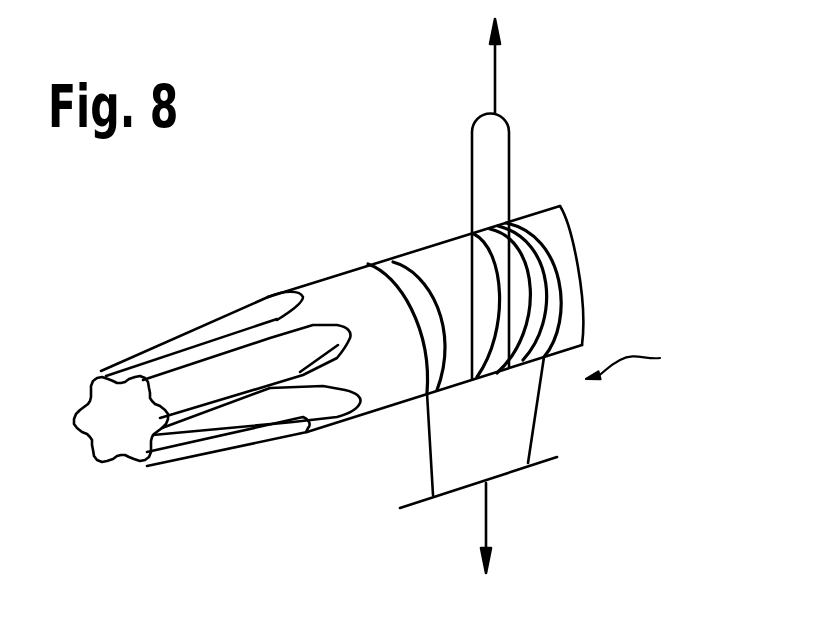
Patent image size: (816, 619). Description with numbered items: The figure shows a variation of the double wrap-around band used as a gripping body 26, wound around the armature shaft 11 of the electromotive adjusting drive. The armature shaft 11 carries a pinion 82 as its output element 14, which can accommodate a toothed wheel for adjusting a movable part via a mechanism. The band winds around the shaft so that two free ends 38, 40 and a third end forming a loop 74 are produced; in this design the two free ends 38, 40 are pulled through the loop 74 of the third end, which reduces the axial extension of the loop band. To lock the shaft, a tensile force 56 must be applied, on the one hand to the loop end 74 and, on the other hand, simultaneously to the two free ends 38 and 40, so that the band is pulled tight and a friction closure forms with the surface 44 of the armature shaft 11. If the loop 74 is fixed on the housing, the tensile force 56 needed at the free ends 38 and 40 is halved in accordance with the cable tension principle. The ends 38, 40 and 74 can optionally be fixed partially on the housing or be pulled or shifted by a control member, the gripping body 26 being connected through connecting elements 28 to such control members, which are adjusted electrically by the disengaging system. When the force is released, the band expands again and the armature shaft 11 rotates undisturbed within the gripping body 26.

The armature shaft 11 is at (560, 235).
The output element 14 is at (217, 427).
The pinion 82 is at (178, 438).
The loop 74 is at (477, 117).
The tensile force 56 is at (495, 72).
The surface 44 is at (488, 303).
The gripping body 26 is at (647, 353).
The free end 40 is at (543, 413).
The free end 38 is at (430, 456).
The connecting element 28 is at (413, 504).